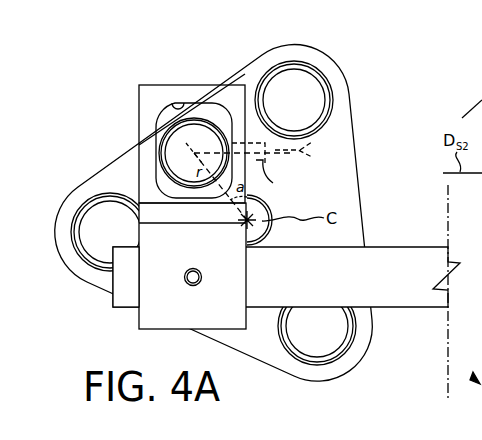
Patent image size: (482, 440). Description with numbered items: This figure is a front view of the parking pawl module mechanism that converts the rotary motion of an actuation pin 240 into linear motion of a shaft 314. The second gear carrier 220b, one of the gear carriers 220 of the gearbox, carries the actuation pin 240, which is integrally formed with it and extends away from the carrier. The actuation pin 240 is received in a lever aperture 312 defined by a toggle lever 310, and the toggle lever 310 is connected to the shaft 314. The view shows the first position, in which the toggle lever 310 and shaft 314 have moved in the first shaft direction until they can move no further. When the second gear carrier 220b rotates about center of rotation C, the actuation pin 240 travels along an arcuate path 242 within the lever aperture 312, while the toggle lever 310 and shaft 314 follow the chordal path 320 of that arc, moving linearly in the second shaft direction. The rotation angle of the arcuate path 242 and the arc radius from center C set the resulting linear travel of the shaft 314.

The gear carrier 220 is at (236, 213).
The second gear carrier 220b is at (352, 151).
The actuation pin 240 is at (175, 147).
The arcuate path 242 is at (292, 158).
The toggle lever 310 is at (153, 312).
The lever aperture 312 is at (178, 106).
The shaft 314 is at (396, 246).
The chordal path 320 is at (273, 183).